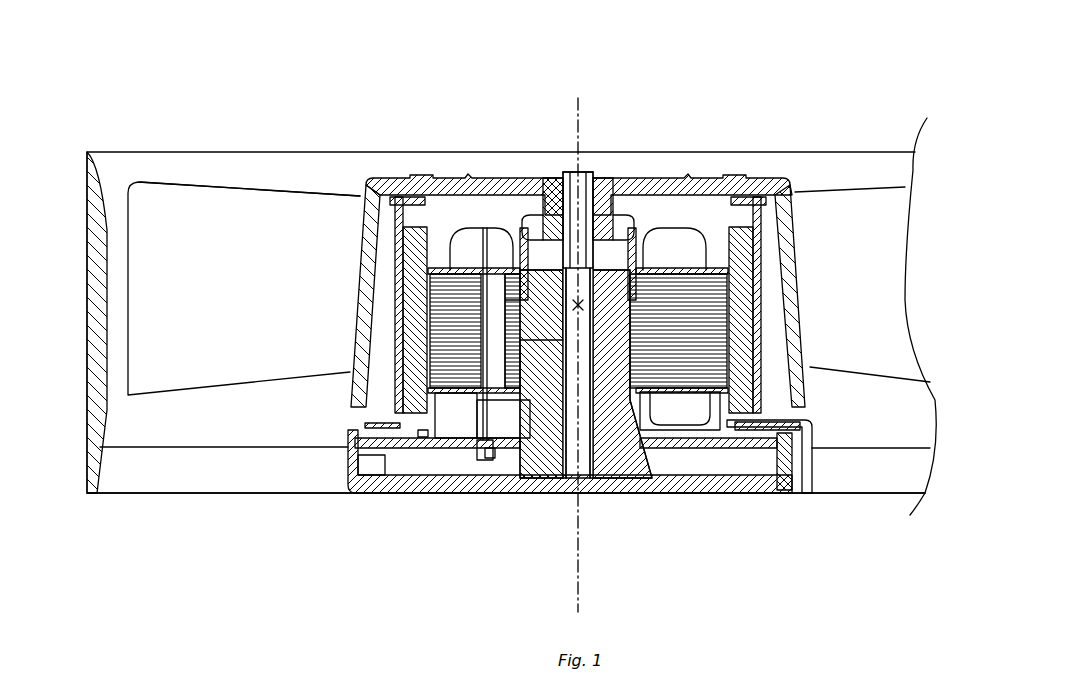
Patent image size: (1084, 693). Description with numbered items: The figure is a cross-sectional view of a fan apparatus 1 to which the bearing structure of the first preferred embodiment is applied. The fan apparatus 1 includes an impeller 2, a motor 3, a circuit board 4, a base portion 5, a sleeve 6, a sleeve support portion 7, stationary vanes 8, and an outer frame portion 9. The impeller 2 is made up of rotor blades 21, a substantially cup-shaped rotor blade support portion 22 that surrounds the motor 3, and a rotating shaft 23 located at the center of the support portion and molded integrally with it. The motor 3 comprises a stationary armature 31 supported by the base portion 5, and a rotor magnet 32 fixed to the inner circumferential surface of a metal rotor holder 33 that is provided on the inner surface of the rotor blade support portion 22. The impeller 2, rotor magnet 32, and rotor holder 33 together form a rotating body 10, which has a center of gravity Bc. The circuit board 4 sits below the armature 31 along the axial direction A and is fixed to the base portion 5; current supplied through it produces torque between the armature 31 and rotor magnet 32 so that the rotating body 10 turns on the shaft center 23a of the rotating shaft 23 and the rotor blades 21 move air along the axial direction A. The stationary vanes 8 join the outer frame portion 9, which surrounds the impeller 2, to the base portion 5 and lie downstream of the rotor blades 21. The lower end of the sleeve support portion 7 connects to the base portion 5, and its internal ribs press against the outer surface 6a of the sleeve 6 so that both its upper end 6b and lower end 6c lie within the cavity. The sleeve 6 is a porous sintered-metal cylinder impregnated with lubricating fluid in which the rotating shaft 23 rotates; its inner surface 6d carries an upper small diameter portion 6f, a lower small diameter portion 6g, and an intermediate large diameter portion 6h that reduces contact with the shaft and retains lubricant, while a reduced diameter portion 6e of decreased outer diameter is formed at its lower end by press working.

The fan apparatus 1 is at (83, 82).
The impeller 2 is at (212, 182).
The rotor blades 21 is at (270, 190).
The rotor blade support portion 22 is at (387, 180).
The motor 3 is at (482, 228).
The circuit board 4 is at (405, 458).
The base portion 5 is at (435, 448).
The sleeve 6 is at (532, 460).
The outer surface of the sleeve 6a is at (626, 478).
The upper end of the sleeve 6b is at (507, 268).
The lower end of the sleeve 6c is at (566, 478).
The inner surface of the sleeve 6d is at (598, 478).
The reduced diameter portion 6e is at (548, 478).
The upper small diameter portion 6f is at (573, 290).
The lower small diameter portion 6g is at (510, 340).
The intermediate large diameter portion 6h is at (500, 308).
The sleeve support portion 7 is at (466, 445).
The stationary vanes 8 is at (205, 494).
The outer frame portion 9 is at (86, 350).
The rotating body 10 is at (827, 190).
The rotating shaft 23 is at (548, 195).
The shaft center 23a is at (582, 118).
The armature 31 is at (670, 238).
The rotor magnet 32 is at (716, 242).
The rotor holder 33 is at (740, 205).
The center of gravity of the rotating body Bc is at (580, 304).
The axial direction A is at (580, 595).